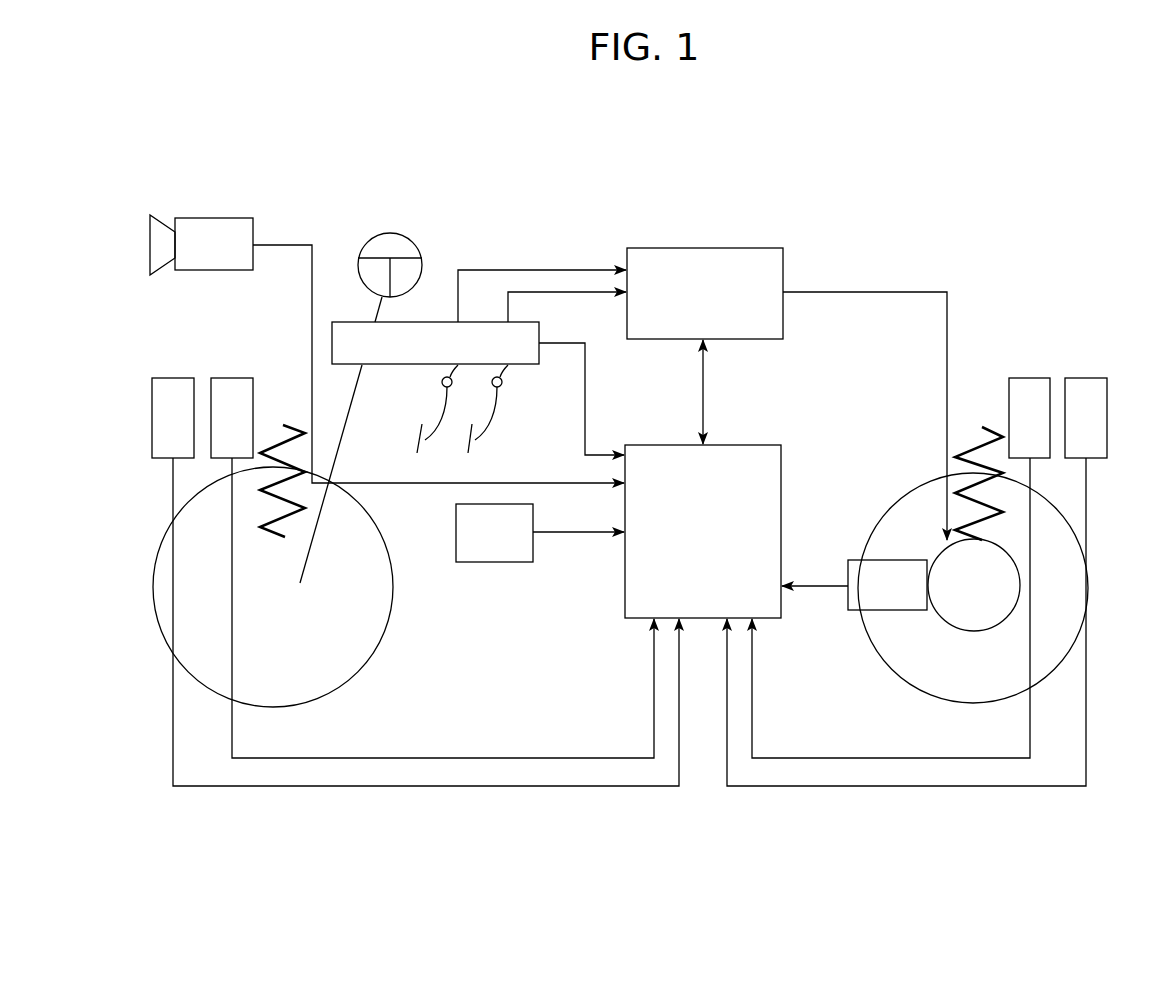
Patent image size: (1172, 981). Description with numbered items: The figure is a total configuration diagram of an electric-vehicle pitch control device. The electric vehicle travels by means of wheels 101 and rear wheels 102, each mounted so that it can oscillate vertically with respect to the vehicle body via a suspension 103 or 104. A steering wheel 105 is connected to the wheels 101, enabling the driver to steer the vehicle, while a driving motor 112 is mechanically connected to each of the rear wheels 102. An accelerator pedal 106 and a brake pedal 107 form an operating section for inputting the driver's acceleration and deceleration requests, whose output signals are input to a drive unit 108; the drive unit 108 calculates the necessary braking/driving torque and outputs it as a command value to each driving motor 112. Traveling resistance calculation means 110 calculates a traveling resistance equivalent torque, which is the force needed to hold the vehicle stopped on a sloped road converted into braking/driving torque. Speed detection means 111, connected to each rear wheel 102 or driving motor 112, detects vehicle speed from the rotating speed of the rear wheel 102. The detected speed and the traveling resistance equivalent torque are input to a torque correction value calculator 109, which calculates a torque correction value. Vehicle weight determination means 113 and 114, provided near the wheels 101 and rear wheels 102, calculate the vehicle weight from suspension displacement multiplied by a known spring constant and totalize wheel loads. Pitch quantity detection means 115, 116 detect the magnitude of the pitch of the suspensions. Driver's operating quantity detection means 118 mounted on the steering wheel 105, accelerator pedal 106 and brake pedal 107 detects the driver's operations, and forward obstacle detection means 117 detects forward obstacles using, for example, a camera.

The wheels 101 is at (352, 655).
The rear wheels 102 is at (1055, 645).
The suspension 103 is at (283, 425).
The suspension 104 is at (982, 427).
The steering wheel 105 is at (385, 233).
The accelerator pedal 106 is at (421, 446).
The brake pedal 107 is at (472, 446).
The drive unit 108 is at (707, 248).
The torque correction value calculator 109 is at (783, 487).
The traveling resistance calculation means 110 is at (490, 566).
The speed detection means 111 is at (880, 612).
The driving motor 112 is at (975, 632).
The vehicle weight determination means 113 is at (165, 378).
The vehicle weight determination means 114 is at (1028, 378).
The pitch quantity detection means 115 is at (229, 378).
The pitch quantity detection means 116 is at (1086, 378).
The forward obstacle detection means 117 is at (214, 218).
The driver's operating quantity detection means 118 is at (383, 366).